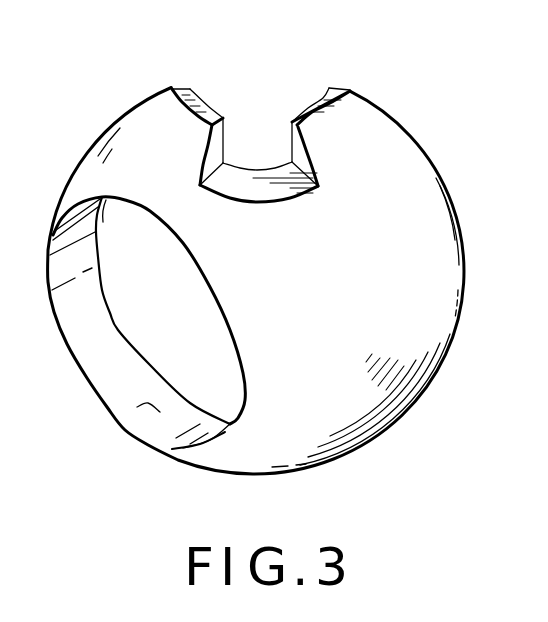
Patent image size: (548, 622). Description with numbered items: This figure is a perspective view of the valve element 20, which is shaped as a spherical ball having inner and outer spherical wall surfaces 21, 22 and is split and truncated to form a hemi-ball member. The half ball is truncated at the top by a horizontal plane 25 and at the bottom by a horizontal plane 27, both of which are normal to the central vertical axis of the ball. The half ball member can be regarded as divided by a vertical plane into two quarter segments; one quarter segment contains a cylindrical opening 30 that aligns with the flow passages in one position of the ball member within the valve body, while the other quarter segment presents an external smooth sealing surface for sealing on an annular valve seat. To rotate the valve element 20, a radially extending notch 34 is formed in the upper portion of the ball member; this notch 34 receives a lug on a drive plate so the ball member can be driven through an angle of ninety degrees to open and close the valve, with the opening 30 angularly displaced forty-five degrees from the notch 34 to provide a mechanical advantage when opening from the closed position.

The valve element 20 is at (177, 458).
The inner spherical wall surface 21 is at (133, 348).
The outer spherical wall surface 22 is at (392, 310).
The horizontal plane 25 is at (205, 117).
The horizontal plane 27 is at (384, 439).
The cylindrical opening 30 is at (137, 407).
The radially extending notch 34 is at (245, 175).